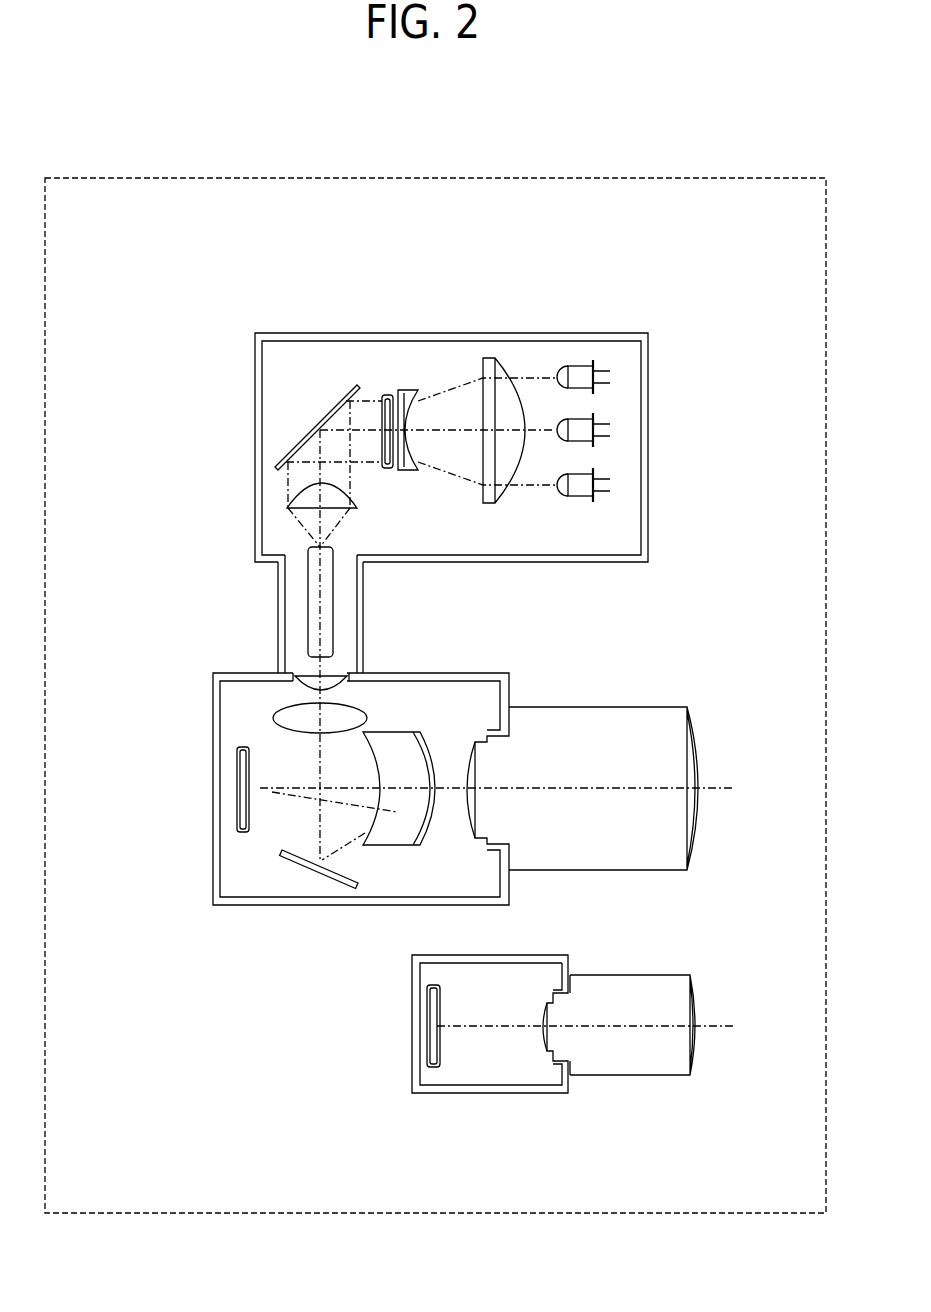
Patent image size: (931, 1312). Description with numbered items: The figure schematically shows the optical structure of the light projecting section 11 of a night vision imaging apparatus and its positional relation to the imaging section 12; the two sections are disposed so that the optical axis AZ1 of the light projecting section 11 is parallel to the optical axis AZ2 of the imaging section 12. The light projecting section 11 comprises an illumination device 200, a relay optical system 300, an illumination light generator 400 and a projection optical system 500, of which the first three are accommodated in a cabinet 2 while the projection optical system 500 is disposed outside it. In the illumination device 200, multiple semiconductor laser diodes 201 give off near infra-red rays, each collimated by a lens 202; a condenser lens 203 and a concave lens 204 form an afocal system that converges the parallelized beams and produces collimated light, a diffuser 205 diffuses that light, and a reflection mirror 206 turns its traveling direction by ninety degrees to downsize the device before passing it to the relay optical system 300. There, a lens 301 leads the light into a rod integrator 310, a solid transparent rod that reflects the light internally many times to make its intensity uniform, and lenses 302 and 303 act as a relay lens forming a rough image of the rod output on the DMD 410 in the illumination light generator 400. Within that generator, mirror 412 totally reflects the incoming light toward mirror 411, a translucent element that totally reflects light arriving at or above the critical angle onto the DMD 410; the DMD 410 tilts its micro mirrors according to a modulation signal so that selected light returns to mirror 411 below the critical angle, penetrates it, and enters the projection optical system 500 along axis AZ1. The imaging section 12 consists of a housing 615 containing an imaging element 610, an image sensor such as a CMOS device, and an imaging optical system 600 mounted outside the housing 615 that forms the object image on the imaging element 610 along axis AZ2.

The cabinet 2 is at (255, 393).
The light projecting section 11 is at (608, 295).
The imaging section 12 is at (577, 1112).
The illumination device 200 is at (673, 430).
The semiconductor laser diode 201 is at (580, 498).
The lens 202 is at (558, 497).
The lens 203 is at (493, 360).
The lens 204 is at (410, 390).
The diffuser 205 is at (388, 395).
The reflection mirror 206 is at (340, 405).
The relay optical system 300 is at (145, 510).
The lens 301 is at (293, 502).
The rod integrator 310 is at (308, 603).
The lens 302 is at (295, 678).
The lens 303 is at (297, 708).
The illumination light generator 400 is at (145, 735).
The DMD 410 is at (237, 776).
The mirror 411 is at (388, 751).
The mirror 412 is at (282, 854).
The projection optical system 500 is at (633, 722).
The imaging optical system 600 is at (653, 1072).
The imaging element 610 is at (435, 1041).
The housing 615 is at (480, 1096).
The optical axis AZ1 is at (527, 789).
The optical axis AZ2 is at (616, 1027).